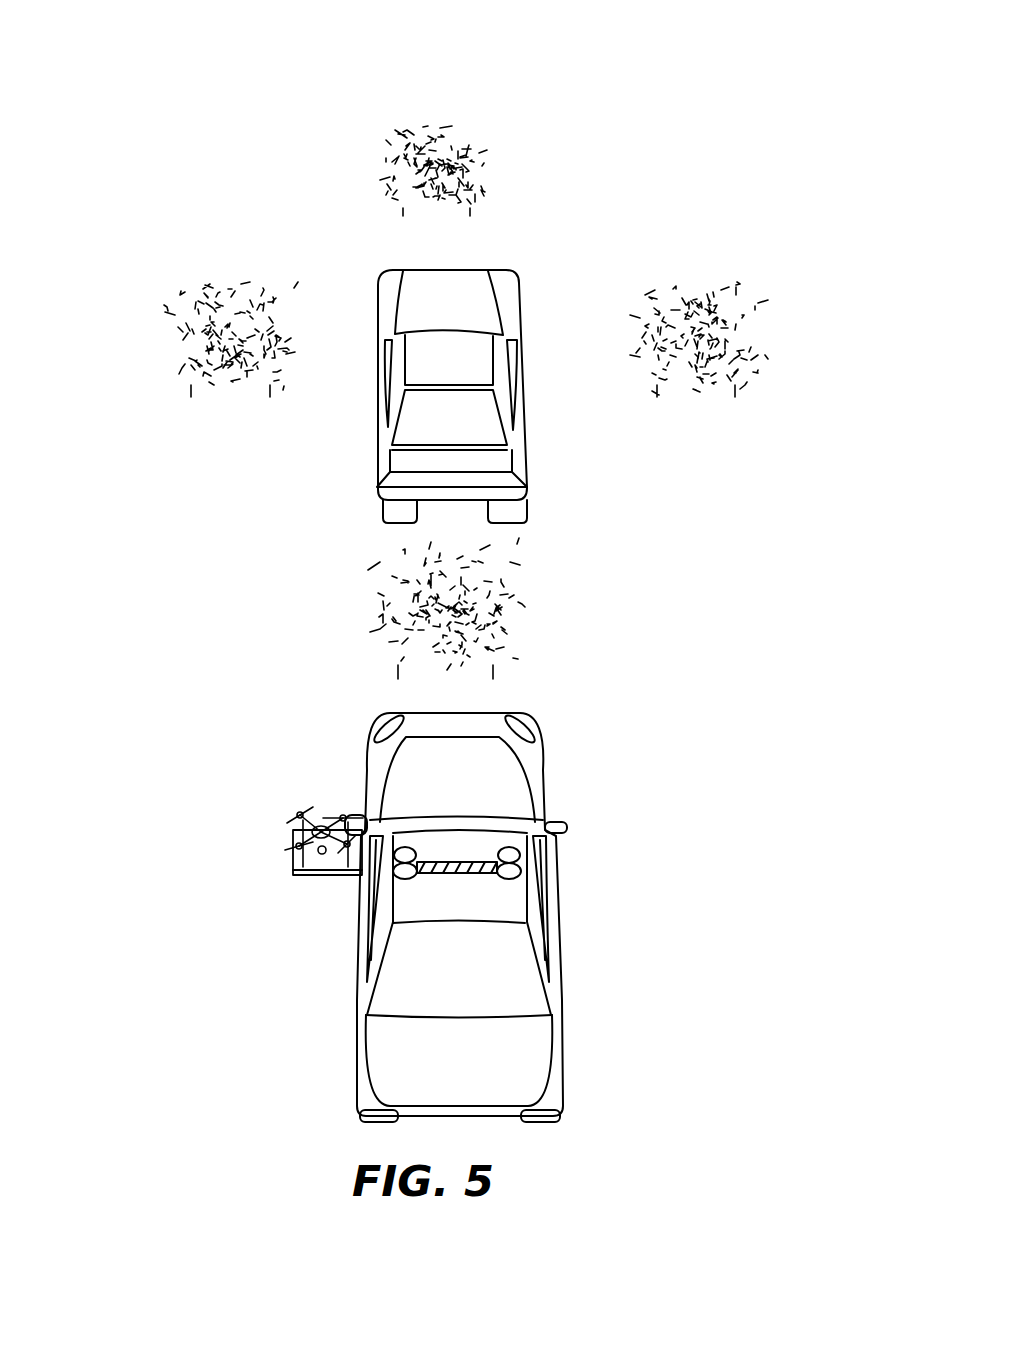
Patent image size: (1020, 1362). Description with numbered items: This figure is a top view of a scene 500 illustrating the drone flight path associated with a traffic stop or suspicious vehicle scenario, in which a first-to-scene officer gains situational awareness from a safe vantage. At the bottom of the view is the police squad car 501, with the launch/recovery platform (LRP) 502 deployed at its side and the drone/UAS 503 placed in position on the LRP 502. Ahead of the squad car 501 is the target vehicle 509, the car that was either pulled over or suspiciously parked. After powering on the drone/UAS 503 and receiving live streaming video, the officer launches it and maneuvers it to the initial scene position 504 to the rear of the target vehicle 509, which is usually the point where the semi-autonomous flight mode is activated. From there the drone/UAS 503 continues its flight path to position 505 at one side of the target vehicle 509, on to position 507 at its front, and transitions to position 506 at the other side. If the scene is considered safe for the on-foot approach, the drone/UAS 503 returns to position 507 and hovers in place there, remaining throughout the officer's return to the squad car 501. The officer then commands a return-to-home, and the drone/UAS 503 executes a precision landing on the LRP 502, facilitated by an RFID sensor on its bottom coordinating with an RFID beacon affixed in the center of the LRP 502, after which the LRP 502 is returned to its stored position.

The scene 500 is at (547, 68).
The squad car 501 is at (560, 927).
The launch/recovery platform (LRP) 502 is at (315, 878).
The drone/UAS 503 is at (297, 822).
The initial scene position 504 is at (505, 596).
The position 505 is at (712, 296).
The position 506 is at (178, 312).
The position 507 is at (443, 130).
The target vehicle 509 is at (533, 445).